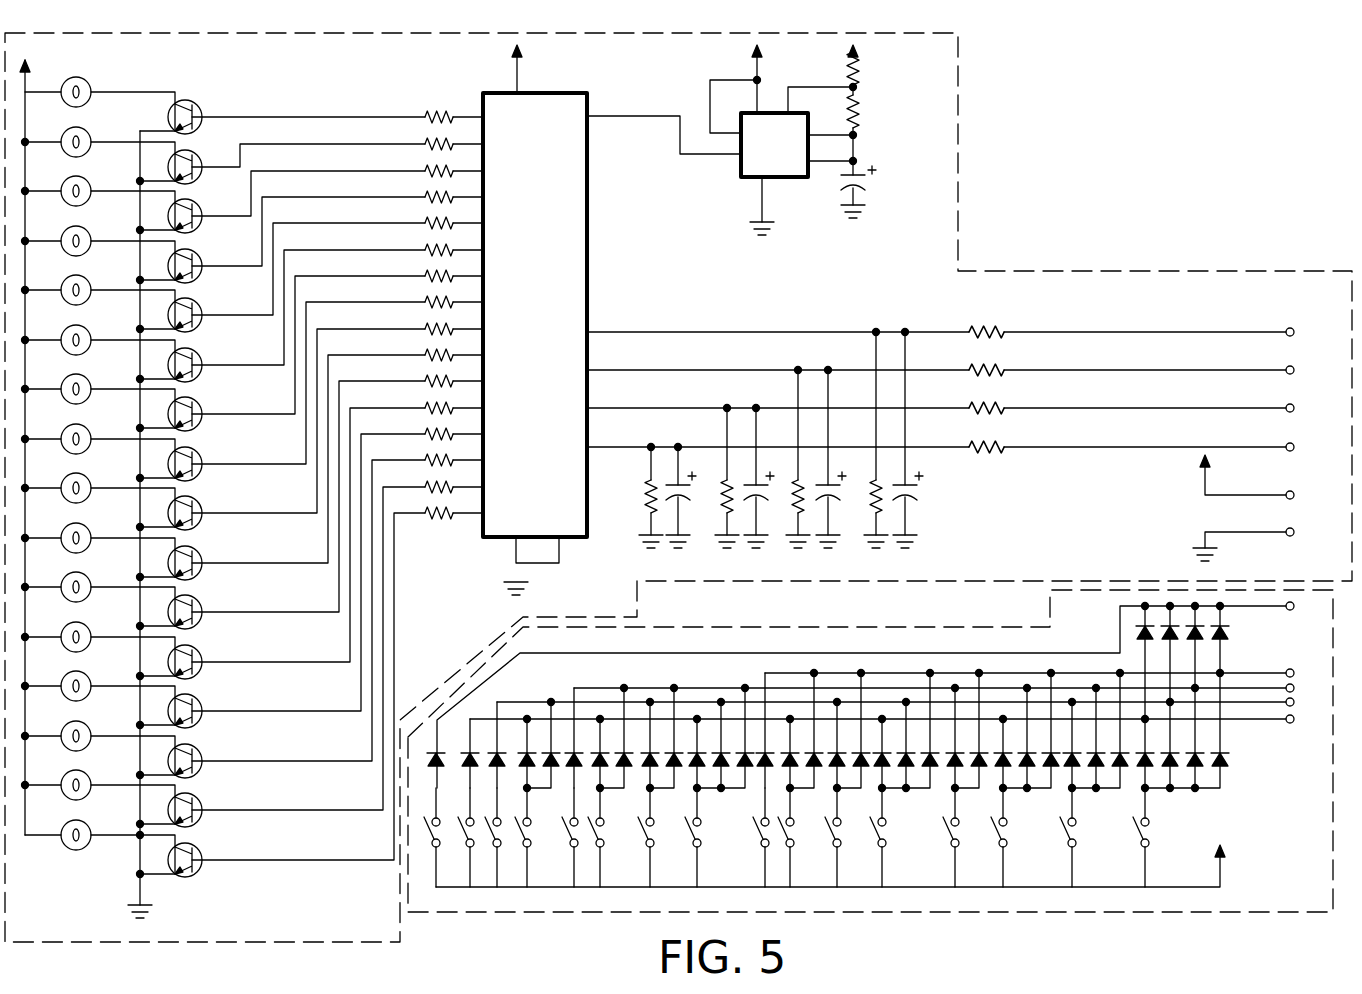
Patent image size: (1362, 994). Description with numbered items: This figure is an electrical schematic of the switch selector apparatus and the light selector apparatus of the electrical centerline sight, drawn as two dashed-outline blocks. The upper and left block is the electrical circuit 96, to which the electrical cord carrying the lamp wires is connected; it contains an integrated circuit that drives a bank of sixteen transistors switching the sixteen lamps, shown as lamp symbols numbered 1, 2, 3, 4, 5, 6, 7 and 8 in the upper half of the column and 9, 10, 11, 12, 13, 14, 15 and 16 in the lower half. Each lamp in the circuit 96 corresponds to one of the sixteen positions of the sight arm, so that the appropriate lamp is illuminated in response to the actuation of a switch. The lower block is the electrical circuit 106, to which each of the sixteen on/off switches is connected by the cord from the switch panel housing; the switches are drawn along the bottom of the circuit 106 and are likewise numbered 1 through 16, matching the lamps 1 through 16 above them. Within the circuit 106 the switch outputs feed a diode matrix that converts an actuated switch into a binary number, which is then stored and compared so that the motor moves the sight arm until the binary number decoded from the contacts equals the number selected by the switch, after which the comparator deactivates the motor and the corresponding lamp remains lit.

The electrical circuit 96 is at (958, 233).
The electrical circuit 106 is at (1092, 912).
The indicator lamp 1 is at (100, 97).
The indicator lamp 2 is at (100, 147).
The indicator lamp 3 is at (100, 196).
The indicator lamp 4 is at (100, 246).
The indicator lamp 5 is at (100, 295).
The indicator lamp 6 is at (100, 345).
The indicator lamp 7 is at (100, 394).
The indicator lamp 8 is at (100, 444).
The indicator lamp 9 is at (100, 493).
The indicator lamp 10 is at (100, 543).
The indicator lamp 11 is at (100, 592).
The indicator lamp 12 is at (100, 642).
The indicator lamp 13 is at (100, 691).
The indicator lamp 14 is at (100, 741).
The indicator lamp 15 is at (100, 790).
The indicator lamp 16 is at (100, 840).